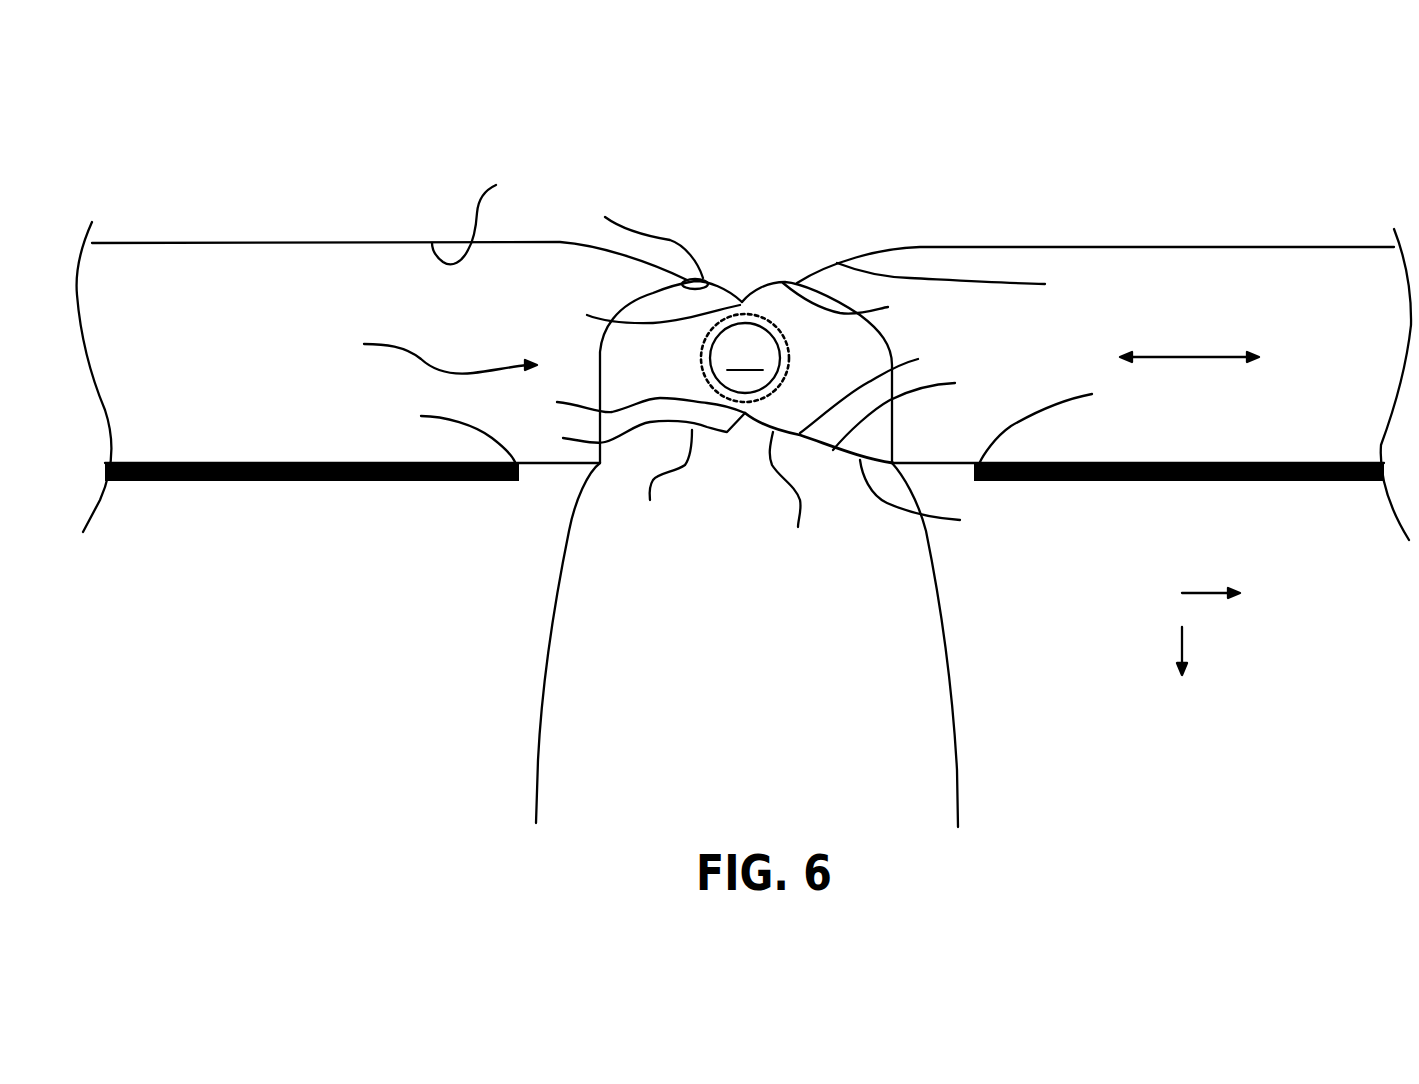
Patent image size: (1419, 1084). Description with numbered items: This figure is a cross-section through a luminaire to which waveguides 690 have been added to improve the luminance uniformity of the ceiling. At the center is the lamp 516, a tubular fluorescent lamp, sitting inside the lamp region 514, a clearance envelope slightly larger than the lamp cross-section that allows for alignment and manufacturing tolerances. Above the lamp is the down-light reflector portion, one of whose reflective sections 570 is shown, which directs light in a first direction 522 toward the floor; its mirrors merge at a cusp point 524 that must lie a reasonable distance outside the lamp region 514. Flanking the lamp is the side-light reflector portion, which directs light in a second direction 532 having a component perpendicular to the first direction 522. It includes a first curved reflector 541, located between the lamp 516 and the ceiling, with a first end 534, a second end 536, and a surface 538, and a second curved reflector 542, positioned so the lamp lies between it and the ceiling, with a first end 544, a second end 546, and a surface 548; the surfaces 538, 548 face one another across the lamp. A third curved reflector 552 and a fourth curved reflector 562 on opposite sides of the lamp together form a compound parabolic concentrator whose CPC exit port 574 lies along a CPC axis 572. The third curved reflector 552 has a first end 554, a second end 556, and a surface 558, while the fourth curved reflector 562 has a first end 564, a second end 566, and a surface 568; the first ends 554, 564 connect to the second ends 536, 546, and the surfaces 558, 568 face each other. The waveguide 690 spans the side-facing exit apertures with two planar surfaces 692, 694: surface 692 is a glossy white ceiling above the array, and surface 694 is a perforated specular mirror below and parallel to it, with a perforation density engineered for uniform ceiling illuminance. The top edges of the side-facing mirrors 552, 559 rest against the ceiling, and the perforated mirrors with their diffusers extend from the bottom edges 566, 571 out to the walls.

The waveguide 690 is at (744, 327).
The planar surface 692 is at (743, 208).
The planar surface 694 is at (744, 517).
The side-facing mirror 559 is at (489, 215).
The second end 536 is at (640, 233).
The surface 538 is at (641, 272).
The first end 534 is at (644, 313).
The reflective section 570 is at (708, 202).
The first curved reflector 541 is at (817, 315).
The cusp point 524 is at (688, 333).
The third curved reflector 552 is at (929, 198).
The second end 556 is at (996, 196).
The surface 558 is at (962, 280).
The CPC axis 572 is at (1189, 311).
The first end 554 is at (855, 301).
The lamp region 514 is at (783, 358).
The lamp 516 is at (745, 358).
The first end 564 is at (879, 387).
The surface 568 is at (913, 410).
The CPC exit port 574 is at (424, 350).
The second end 566 is at (1057, 420).
The first end 544 is at (630, 398).
The bottom edge 571 is at (445, 435).
The surface 548 is at (632, 432).
The second end 546 is at (660, 478).
The second curved reflector 542 is at (795, 492).
The fourth curved reflector 562 is at (873, 474).
The second direction 532 is at (1233, 615).
The first direction 522 is at (1230, 658).